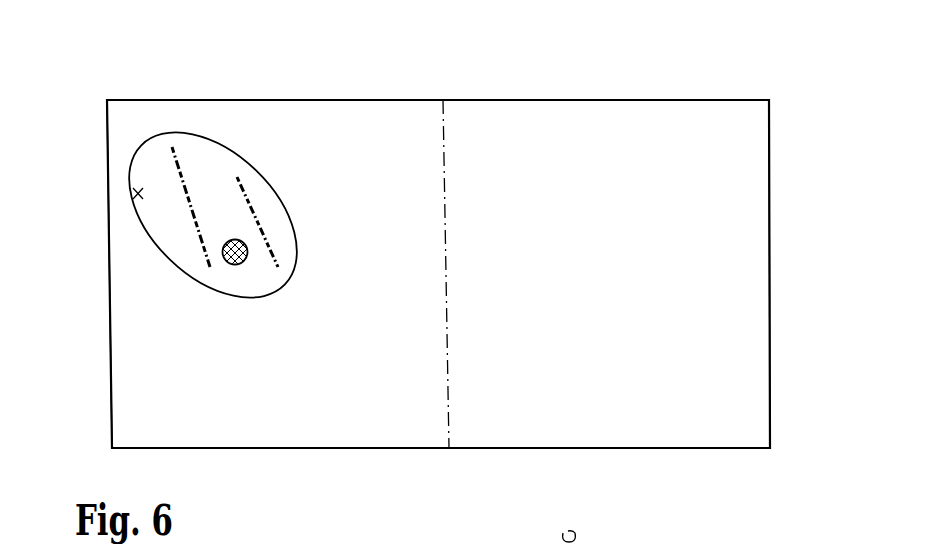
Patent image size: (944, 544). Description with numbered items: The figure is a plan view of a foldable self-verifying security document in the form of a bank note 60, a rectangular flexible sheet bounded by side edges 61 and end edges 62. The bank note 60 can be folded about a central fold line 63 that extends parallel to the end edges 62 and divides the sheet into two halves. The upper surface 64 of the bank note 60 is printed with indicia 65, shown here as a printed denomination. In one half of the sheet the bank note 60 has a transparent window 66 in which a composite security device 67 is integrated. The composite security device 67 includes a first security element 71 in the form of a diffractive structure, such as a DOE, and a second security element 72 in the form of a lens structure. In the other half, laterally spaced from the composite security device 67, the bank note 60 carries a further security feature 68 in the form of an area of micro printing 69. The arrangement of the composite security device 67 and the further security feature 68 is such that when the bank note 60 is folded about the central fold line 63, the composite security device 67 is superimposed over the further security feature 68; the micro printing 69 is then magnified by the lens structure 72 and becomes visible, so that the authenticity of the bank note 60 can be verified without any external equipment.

The bank note 60 is at (133, 92).
The side edges 61 is at (397, 100).
The end edges 62 is at (769, 256).
The central fold line 63 is at (447, 293).
The upper surface 64 is at (535, 132).
The indicia 65 is at (730, 397).
The transparent window 66 is at (217, 143).
The composite security device 67 is at (176, 243).
The further security feature 68 is at (660, 142).
The micro printing 69 is at (720, 162).
The first security element 71 is at (233, 265).
The second security element 72 is at (133, 196).